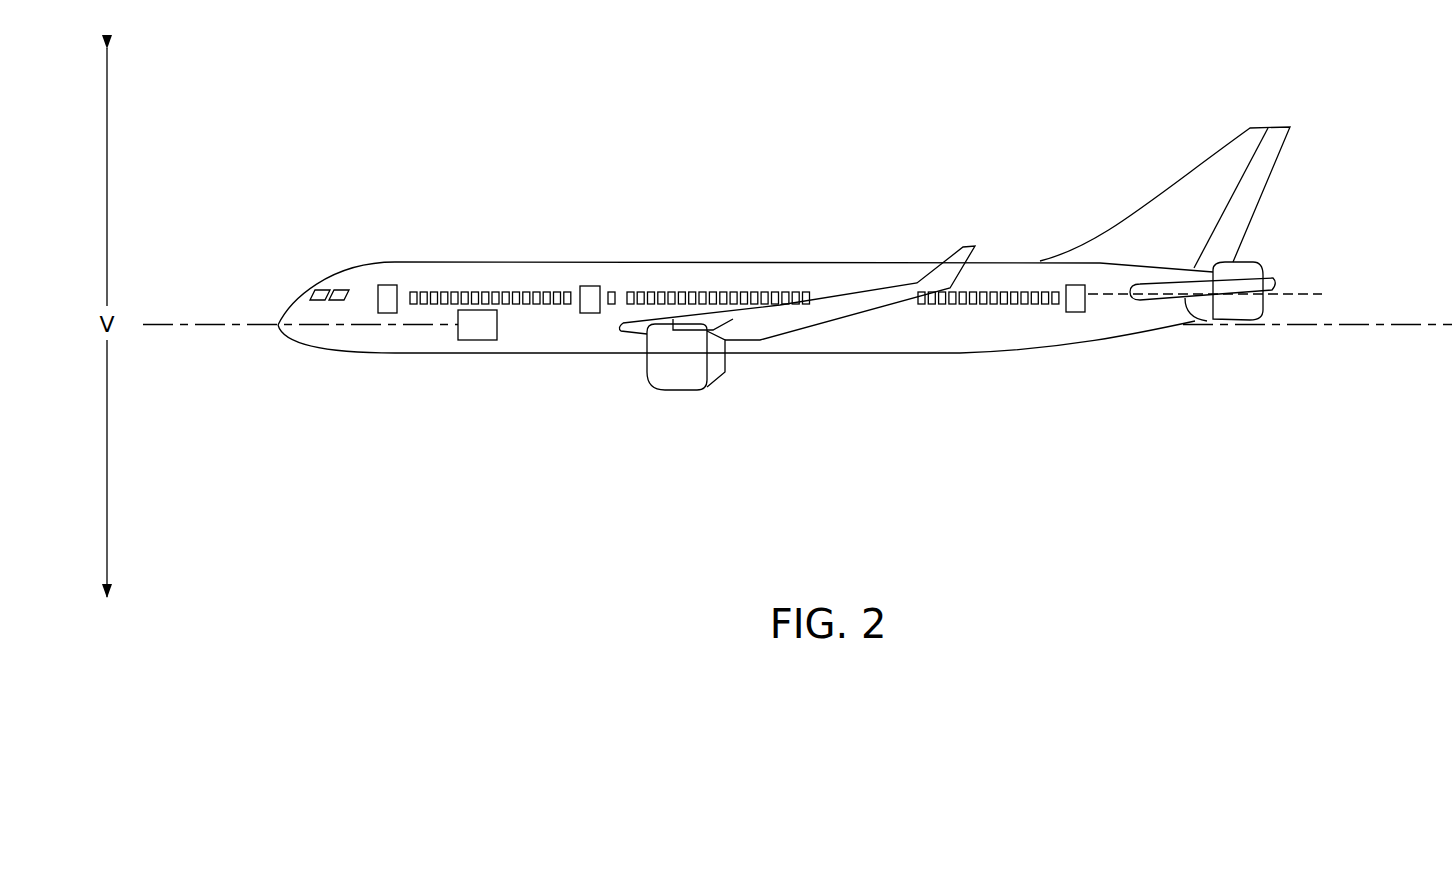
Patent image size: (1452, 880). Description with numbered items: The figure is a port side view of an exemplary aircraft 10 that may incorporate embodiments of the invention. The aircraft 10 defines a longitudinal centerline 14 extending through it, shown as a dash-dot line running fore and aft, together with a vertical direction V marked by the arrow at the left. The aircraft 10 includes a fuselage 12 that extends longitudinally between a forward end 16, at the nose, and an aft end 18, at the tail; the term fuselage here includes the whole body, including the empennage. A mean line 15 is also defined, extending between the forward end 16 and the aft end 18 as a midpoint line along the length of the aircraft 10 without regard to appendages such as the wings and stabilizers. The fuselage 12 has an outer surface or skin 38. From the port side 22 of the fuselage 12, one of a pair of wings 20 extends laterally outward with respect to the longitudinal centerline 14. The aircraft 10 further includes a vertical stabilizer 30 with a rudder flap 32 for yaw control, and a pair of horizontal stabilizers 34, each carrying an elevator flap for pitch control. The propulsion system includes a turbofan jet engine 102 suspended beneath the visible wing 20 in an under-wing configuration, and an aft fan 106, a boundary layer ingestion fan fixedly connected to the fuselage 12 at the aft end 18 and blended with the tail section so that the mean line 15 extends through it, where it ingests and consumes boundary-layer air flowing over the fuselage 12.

The aircraft 10 is at (386, 201).
The fuselage 12 is at (741, 303).
The longitudinal centerline 14 is at (160, 332).
The mean line 15 is at (1110, 292).
The forward end 16 is at (285, 346).
The aft end 18 is at (1203, 271).
The wings 20 is at (874, 300).
The port side 22 is at (958, 345).
The vertical stabilizer 30 is at (1212, 172).
The rudder flap 32 is at (1276, 170).
The horizontal stabilizers 34 is at (1203, 322).
The outer surface or skin 38 is at (652, 261).
The turbofan jet engine 102 is at (667, 386).
The aft fan 106 is at (1264, 250).